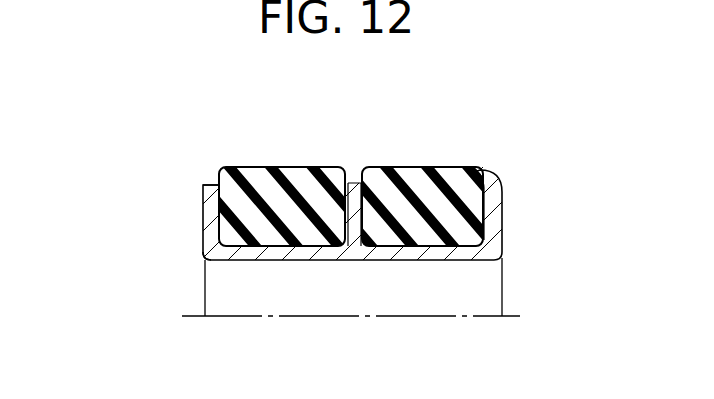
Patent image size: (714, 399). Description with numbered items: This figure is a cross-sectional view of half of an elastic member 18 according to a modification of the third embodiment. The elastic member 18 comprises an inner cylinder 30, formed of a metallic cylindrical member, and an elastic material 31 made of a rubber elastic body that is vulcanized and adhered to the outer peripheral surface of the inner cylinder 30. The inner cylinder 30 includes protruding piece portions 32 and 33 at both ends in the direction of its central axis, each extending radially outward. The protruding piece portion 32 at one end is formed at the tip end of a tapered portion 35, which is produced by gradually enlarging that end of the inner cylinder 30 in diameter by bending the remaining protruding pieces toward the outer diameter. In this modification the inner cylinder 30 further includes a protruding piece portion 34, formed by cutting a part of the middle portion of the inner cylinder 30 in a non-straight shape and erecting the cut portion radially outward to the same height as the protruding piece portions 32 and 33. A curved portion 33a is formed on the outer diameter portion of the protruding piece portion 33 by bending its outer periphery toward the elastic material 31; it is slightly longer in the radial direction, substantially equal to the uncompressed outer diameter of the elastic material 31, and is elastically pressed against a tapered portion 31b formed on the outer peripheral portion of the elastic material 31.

The elastic member 18 is at (194, 222).
The inner cylinder 30 is at (295, 253).
The elastic material 31 is at (288, 177).
The tapered portion 31b is at (480, 168).
The protruding piece portion 32 is at (203, 194).
The protruding piece portion 33 is at (501, 222).
The curved portion 33a is at (496, 184).
The protruding piece portion 34 is at (356, 178).
The tapered portion 35 is at (206, 259).